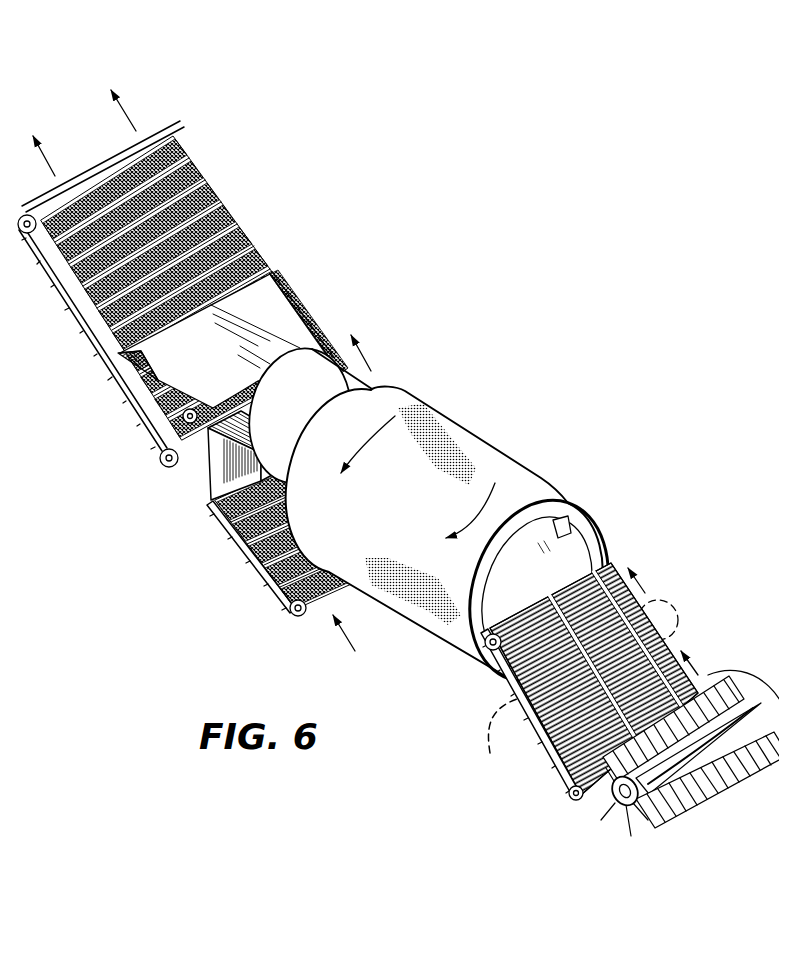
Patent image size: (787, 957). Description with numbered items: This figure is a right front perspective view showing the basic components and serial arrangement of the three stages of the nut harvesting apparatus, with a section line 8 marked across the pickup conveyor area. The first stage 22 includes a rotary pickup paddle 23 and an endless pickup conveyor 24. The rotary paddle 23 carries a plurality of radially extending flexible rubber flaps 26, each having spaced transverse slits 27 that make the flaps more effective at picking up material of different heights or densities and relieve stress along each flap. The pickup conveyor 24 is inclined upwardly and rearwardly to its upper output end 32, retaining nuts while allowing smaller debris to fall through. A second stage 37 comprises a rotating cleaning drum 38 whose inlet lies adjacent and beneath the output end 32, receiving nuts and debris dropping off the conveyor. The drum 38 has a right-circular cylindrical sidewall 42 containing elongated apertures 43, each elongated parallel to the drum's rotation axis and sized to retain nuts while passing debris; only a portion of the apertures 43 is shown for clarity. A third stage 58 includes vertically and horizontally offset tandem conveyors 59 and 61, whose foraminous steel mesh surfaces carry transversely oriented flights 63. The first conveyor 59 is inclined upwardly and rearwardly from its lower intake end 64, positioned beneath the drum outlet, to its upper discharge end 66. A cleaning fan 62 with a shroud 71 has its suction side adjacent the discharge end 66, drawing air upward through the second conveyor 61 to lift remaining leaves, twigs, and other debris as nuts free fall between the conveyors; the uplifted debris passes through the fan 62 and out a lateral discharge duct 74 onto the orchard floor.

The section line 8 is at (483, 743).
The first stage 22 is at (679, 581).
The rotary pickup paddle 23 is at (557, 791).
The endless pickup conveyor 24 is at (699, 642).
The flexible rubber flaps 26 is at (617, 815).
The transverse slits 27 is at (753, 767).
The upper output end 32 is at (606, 548).
The second stage 37 is at (390, 645).
The rotating cleaning drum 38 is at (445, 400).
The right-circular cylindrical sidewall 42 is at (530, 485).
The elongated apertures 43 is at (465, 452).
The third stage 58 is at (285, 182).
The first conveyor 59 is at (240, 548).
The second conveyor 61 is at (207, 155).
The cleaning fan 62 is at (375, 378).
The transversely oriented flights 63 is at (150, 118).
The lower intake end 64 is at (306, 613).
The upper discharge end 66 is at (312, 322).
The shroud 71 is at (250, 307).
The lateral discharge duct 74 is at (200, 482).